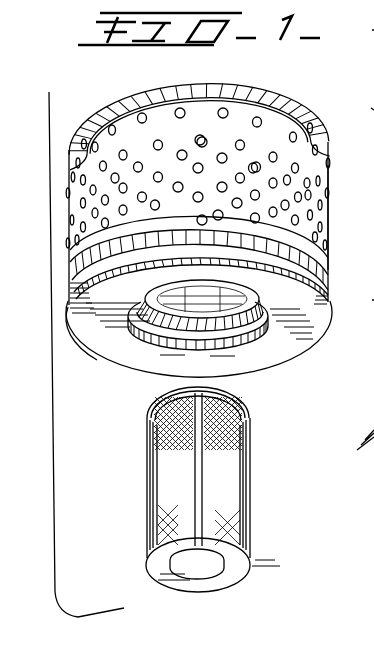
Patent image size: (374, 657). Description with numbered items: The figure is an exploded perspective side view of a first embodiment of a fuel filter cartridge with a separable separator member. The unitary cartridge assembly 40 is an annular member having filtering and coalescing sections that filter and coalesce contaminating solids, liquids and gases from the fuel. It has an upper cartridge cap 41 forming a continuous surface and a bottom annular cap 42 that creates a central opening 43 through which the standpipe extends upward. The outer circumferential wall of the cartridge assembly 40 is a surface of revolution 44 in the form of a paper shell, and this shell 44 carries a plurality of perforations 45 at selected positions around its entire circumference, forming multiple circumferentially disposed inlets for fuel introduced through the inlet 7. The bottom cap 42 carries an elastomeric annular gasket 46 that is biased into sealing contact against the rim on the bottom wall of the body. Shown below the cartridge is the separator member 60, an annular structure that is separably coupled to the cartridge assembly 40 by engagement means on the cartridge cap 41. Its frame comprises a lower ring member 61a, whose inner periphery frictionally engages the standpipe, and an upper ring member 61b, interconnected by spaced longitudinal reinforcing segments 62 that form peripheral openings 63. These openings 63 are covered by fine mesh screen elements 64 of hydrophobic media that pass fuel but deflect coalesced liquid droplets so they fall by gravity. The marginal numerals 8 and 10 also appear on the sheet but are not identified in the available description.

The inlet 7 is at (369, 34).
The housing wall 8 is at (373, 116).
The inlet 10 is at (364, 303).
The cartridge assembly 40 is at (73, 220).
The upper cartridge cap 41 is at (101, 104).
The bottom annular cap 42 is at (112, 292).
The central opening 43 is at (244, 329).
The surface of revolution 44 is at (327, 187).
The perforations 45 is at (158, 141).
The elastomeric annular gasket 46 is at (282, 328).
The separator member 60 is at (225, 468).
The lower ring member 61a is at (237, 578).
The upper ring member 61b is at (227, 387).
The longitudinal reinforcing segments 62 is at (195, 465).
The peripheral openings 63 is at (155, 432).
The fine mesh screen elements 64 is at (190, 447).